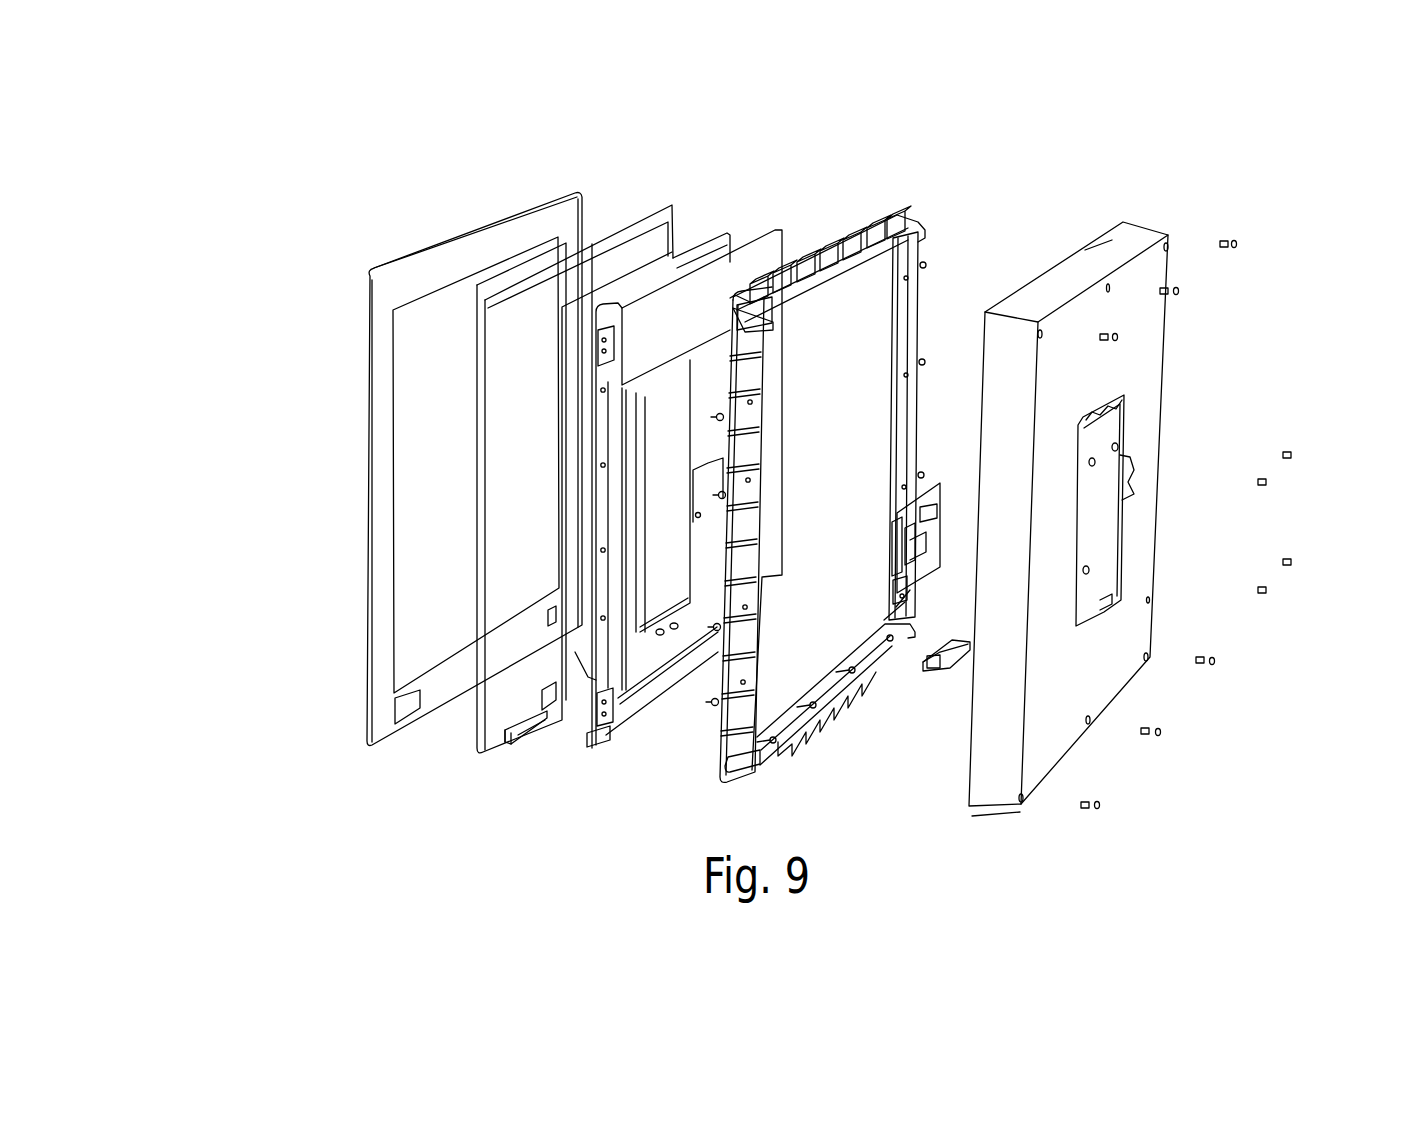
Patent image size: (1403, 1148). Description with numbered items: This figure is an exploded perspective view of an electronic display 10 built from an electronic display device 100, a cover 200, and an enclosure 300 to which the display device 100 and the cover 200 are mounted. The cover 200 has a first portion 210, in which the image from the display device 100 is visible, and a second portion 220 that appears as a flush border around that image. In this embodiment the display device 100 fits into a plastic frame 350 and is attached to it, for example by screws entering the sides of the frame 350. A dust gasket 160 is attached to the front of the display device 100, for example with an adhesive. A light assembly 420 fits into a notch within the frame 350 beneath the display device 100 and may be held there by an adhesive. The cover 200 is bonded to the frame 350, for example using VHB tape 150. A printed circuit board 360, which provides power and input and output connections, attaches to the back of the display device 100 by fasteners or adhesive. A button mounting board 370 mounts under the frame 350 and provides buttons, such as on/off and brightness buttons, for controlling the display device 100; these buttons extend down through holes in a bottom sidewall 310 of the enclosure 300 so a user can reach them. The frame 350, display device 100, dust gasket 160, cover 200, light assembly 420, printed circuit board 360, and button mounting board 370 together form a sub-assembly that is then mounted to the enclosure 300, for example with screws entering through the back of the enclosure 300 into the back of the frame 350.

The electronic display 10 is at (697, 143).
The electronic display device 100 is at (637, 670).
The VHB tape 150 is at (601, 245).
The dust gasket 160 is at (715, 237).
The cover 200 is at (365, 301).
The first portion 210 is at (445, 465).
The second portion 220 is at (380, 585).
The enclosure 300 is at (1140, 385).
The bottom sidewall 310 is at (1110, 247).
The plastic frame 350 is at (905, 330).
The printed circuit board 360 is at (899, 619).
The button mounting board 370 is at (946, 655).
The light assembly 420 is at (510, 743).